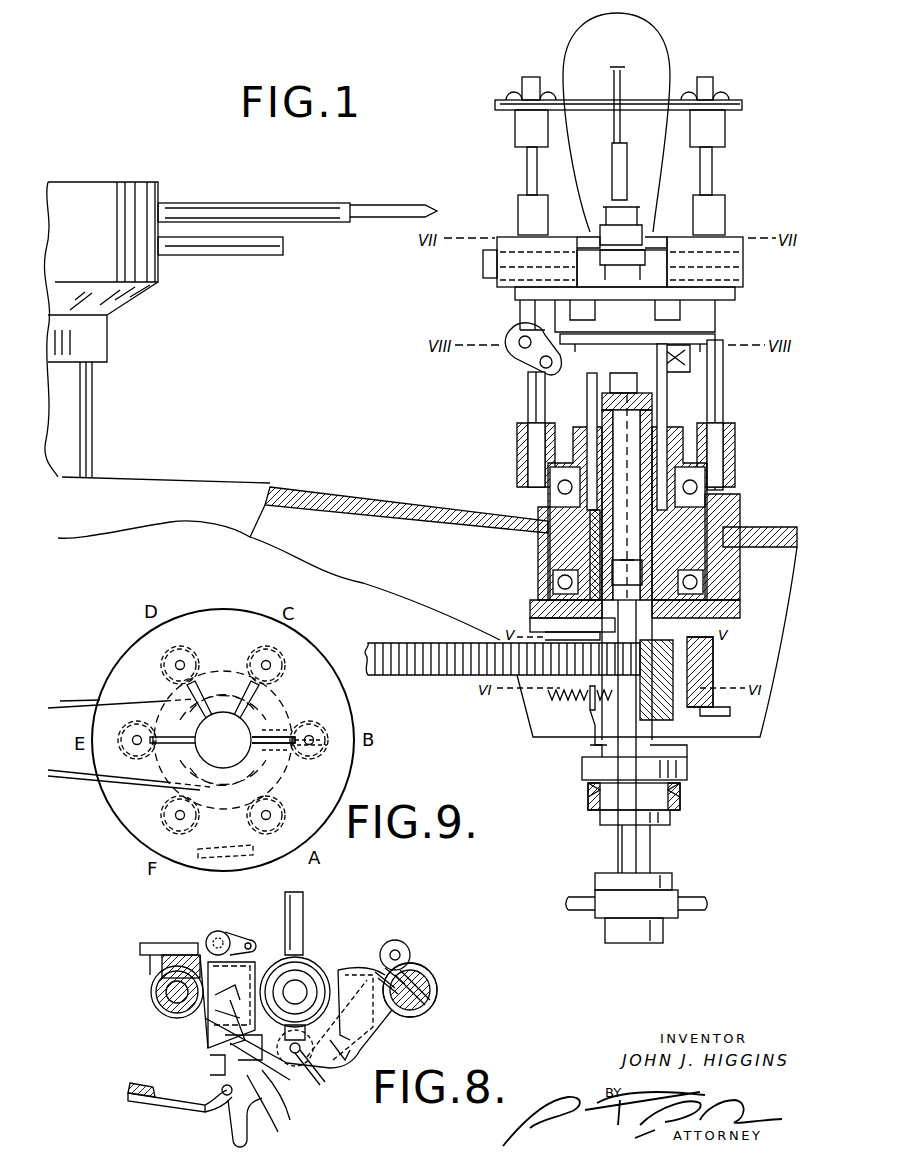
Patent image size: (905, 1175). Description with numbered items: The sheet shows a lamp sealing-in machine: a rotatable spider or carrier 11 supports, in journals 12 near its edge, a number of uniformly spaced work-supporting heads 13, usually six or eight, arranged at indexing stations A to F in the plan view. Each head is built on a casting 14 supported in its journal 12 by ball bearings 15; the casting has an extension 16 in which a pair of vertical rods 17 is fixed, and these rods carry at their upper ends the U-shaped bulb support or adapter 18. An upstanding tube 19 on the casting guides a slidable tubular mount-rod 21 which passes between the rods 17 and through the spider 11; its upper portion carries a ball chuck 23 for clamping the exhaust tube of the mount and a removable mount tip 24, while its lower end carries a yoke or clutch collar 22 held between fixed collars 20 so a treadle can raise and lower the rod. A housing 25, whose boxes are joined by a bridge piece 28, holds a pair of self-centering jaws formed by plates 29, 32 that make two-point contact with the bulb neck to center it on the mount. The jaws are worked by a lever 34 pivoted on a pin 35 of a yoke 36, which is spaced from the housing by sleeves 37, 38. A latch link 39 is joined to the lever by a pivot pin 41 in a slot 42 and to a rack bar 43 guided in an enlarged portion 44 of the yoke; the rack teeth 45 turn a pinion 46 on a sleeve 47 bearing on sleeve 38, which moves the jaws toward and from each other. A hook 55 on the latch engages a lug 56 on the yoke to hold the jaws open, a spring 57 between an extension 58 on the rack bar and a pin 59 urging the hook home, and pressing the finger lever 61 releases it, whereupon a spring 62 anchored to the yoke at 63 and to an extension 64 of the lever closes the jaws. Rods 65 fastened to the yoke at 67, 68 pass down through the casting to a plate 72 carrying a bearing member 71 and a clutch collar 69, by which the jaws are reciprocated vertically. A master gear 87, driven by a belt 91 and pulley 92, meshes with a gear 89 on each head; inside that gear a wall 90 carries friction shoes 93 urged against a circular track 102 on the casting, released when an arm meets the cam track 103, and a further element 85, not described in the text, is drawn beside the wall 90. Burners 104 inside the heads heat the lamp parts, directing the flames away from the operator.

In FIG. 1, the spider or carrier 11 is at (274, 483).
In FIG. 1, the journals 12 is at (715, 510).
In FIG. 1, the work-supporting heads 13 is at (593, 156).
In FIG. 9, the work-supporting heads 13 is at (223, 730).
In FIG. 1, the casting 14 is at (565, 455).
In FIG. 1, the ball bearings 15 is at (550, 487).
In FIG. 1, the extension 16 is at (517, 428).
In FIG. 1, the vertical rods 17 is at (527, 390).
In FIG. 8, the vertical rods 17 is at (152, 992).
In FIG. 1, the bulb support or adapter 18 is at (742, 105).
In FIG. 1, the upstanding tube 19 is at (652, 408).
In FIG. 1, the collars 20 is at (672, 877).
In FIG. 1, the tubular mount-rod 21 is at (627, 683).
In FIG. 1, the yoke or clutch collar 22 is at (637, 904).
In FIG. 1, the ball chuck 23 is at (635, 316).
In FIG. 1, the mount tip 24 is at (630, 222).
In FIG. 1, the casting or housing 25 is at (744, 262).
In FIG. 1, the bridge piece 28 is at (640, 278).
In FIG. 1, the plate 29 is at (588, 236).
In FIG. 1, the plate 32 is at (660, 238).
In FIG. 8, the lever 34 is at (259, 1099).
In FIG. 8, the pin 35 is at (300, 1055).
In FIG. 1, the yoke 36 is at (650, 341).
In FIG. 8, the yoke 36 is at (358, 1020).
In FIG. 1, the sleeve 37 is at (735, 297).
In FIG. 8, the sleeve 37 is at (438, 990).
In FIG. 1, the sleeve 38 is at (520, 305).
In FIG. 8, the sleeve 38 is at (170, 1020).
In FIG. 8, the latch link 39 is at (242, 1054).
In FIG. 8, the pivot pin 41 is at (255, 1120).
In FIG. 8, the slot 42 is at (272, 1113).
In FIG. 8, the rack bar 43 is at (210, 935).
In FIG. 8, the enlarged portion 44 is at (260, 965).
In FIG. 8, the teeth 45 is at (210, 1030).
In FIG. 8, the pinion 46 is at (218, 1028).
In FIG. 8, the sleeve 47 is at (165, 1005).
In FIG. 8, the hook 55 is at (262, 1050).
In FIG. 8, the lug 56 is at (235, 1050).
In FIG. 8, the spring 57 is at (236, 992).
In FIG. 8, the extension 58 is at (262, 935).
In FIG. 8, the pin 59 is at (236, 1013).
In FIG. 8, the finger lever 61 is at (230, 1125).
In FIG. 8, the spring 62 is at (382, 967).
In FIG. 8, the spring anchorage on yoke 63 is at (405, 948).
In FIG. 8, the extension 64 is at (395, 940).
In FIG. 1, the rod 65 is at (590, 527).
In FIG. 1, the rod attachment point 67 is at (583, 345).
In FIG. 1, the rod attachment point 68 is at (677, 367).
In FIG. 1, the clutch collar 69 is at (634, 796).
In FIG. 1, the bearing member 71 is at (670, 820).
In FIG. 1, the plate 72 is at (688, 769).
In FIG. 1, the spring 85 is at (580, 707).
In FIG. 1, the master gear 87 is at (422, 676).
In FIG. 9, the master gear 87 is at (288, 705).
In FIG. 1, the gears 89 is at (713, 665).
In FIG. 9, the gears 89 is at (320, 725).
In FIG. 1, the wall 90 is at (560, 683).
In FIG. 9, the belt 91 is at (78, 700).
In FIG. 9, the pulley 92 is at (185, 768).
In FIG. 1, the friction shoe 93 is at (705, 680).
In FIG. 1, the circular track 102 is at (713, 648).
In FIG. 9, the cam track 103 is at (240, 858).
In FIG. 1, the burners 104 is at (313, 205).
In FIG. 9, the burners 104 is at (262, 743).